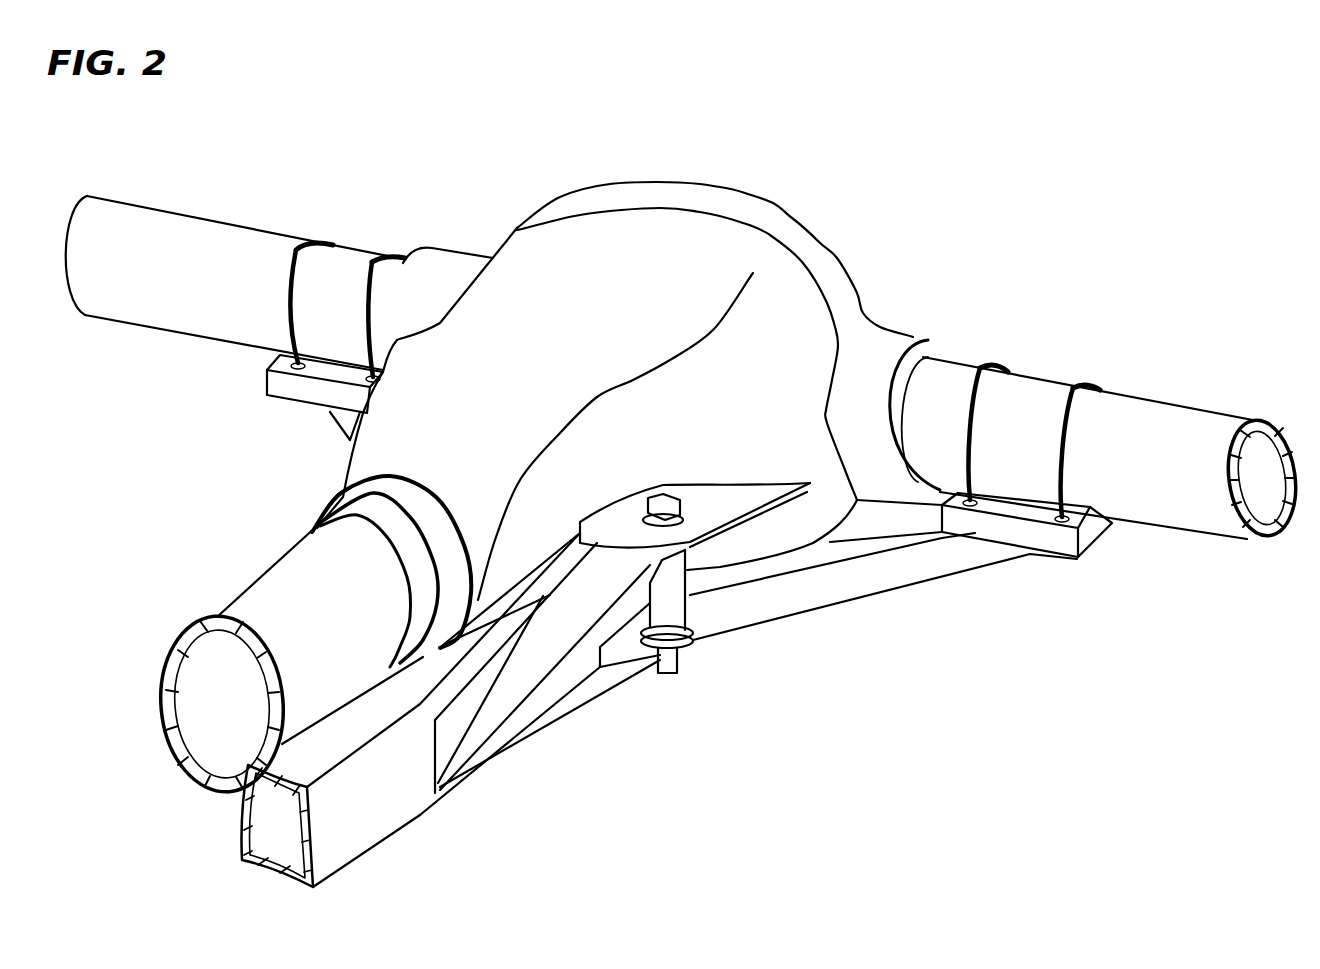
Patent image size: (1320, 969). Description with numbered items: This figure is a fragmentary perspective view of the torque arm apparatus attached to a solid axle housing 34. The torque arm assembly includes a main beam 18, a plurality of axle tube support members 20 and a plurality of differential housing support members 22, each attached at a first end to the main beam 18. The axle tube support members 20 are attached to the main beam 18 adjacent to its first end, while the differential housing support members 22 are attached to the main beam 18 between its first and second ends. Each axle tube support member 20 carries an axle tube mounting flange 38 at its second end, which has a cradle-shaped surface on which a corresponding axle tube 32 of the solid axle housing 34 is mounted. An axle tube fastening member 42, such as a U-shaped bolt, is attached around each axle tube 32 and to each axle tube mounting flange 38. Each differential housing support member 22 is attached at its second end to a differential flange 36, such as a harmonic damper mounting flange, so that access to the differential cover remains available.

The main beam 18 is at (372, 782).
The axle tube support member 20 is at (347, 425).
The differential housing support member 22 is at (513, 677).
The axle tube 32 is at (193, 250).
The solid axle housing 34 is at (735, 198).
The differential flange 36 is at (727, 507).
The axle tube mounting flange 38 is at (278, 390).
The axle tube fastening member 42 is at (978, 370).